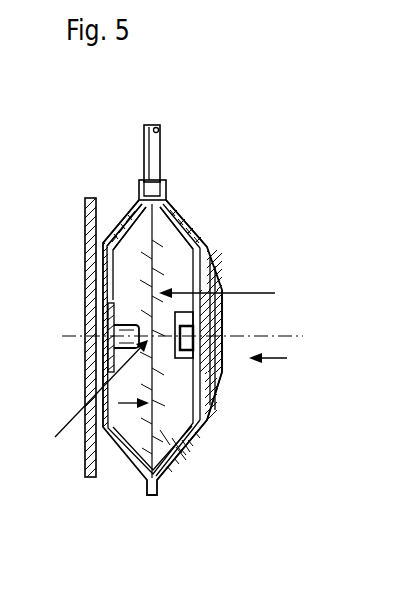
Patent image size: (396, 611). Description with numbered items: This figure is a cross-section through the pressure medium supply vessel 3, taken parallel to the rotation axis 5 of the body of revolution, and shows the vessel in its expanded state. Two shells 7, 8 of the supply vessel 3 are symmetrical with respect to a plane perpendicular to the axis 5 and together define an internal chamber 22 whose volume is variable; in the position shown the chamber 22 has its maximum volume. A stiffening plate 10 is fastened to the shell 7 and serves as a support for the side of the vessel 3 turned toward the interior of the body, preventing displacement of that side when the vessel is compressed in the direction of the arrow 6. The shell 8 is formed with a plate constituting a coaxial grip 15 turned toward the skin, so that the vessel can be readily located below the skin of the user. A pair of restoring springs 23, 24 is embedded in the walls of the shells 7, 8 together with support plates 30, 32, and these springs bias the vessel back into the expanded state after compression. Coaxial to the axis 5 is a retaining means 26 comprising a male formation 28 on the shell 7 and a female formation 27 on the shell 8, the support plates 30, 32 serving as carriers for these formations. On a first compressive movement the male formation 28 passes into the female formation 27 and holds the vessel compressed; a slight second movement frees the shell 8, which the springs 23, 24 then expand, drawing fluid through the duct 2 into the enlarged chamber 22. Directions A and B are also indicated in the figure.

The duct 2 is at (157, 145).
The supply vessel 3 is at (200, 462).
The rotation axis 5 is at (191, 334).
The arrow 6 is at (277, 366).
The shell 7 is at (122, 214).
The shell 8 is at (187, 228).
The stiffening plate 10 is at (90, 196).
The coaxial grip 15 is at (213, 387).
The internal chamber 22 is at (195, 432).
The restoring spring 23 is at (107, 255).
The restoring spring 24 is at (203, 258).
The retaining means 26 is at (85, 402).
The female formation 27 is at (195, 325).
The male formation 28 is at (128, 343).
The support plate 30 is at (106, 309).
The support plate 32 is at (222, 362).
The direction A is at (128, 403).
The direction B is at (227, 281).